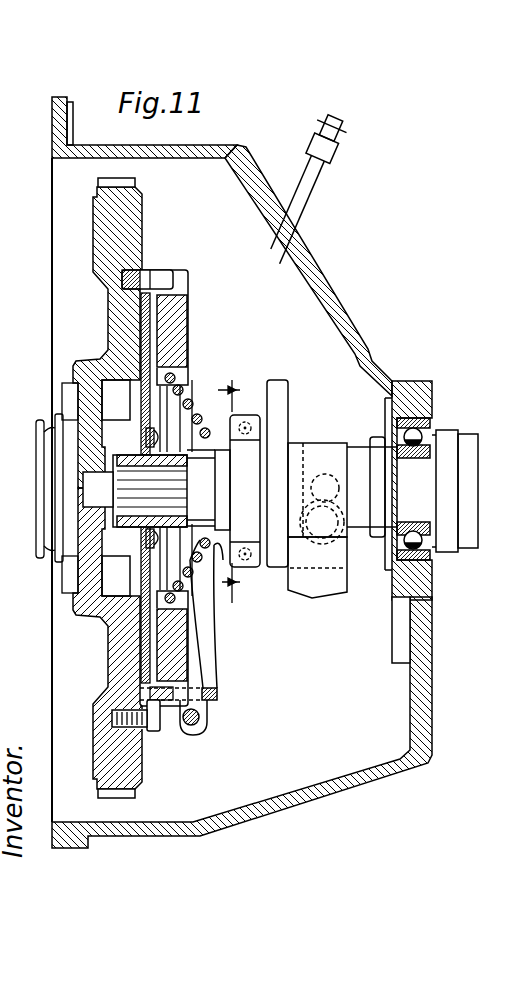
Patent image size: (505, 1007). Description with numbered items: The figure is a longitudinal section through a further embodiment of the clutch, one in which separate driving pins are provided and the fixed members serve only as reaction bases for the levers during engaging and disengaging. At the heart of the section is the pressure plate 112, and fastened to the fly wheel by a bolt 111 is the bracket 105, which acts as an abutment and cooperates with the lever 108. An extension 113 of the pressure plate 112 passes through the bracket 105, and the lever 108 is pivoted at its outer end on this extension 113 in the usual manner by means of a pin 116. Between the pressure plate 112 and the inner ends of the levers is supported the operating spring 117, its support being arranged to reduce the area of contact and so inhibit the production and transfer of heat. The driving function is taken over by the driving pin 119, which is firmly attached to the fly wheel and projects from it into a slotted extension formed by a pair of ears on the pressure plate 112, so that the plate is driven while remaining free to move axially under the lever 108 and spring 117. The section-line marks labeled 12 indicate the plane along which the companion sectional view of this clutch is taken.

The section line 12 is at (260, 394).
The bracket 105 is at (218, 690).
The lever 108 is at (203, 616).
The bolt 111 is at (147, 731).
The pressure plate 112 is at (188, 304).
The extension of the pressure plate 113 is at (207, 712).
The pin 116 is at (192, 735).
The operating spring 117 is at (192, 403).
The driving pin 119 is at (160, 270).